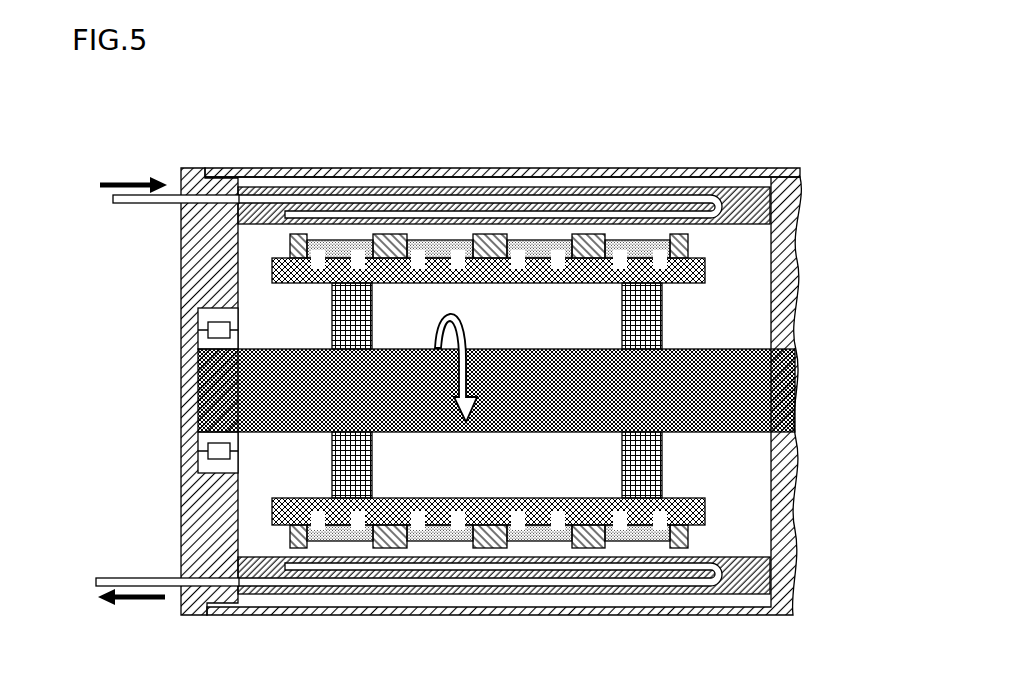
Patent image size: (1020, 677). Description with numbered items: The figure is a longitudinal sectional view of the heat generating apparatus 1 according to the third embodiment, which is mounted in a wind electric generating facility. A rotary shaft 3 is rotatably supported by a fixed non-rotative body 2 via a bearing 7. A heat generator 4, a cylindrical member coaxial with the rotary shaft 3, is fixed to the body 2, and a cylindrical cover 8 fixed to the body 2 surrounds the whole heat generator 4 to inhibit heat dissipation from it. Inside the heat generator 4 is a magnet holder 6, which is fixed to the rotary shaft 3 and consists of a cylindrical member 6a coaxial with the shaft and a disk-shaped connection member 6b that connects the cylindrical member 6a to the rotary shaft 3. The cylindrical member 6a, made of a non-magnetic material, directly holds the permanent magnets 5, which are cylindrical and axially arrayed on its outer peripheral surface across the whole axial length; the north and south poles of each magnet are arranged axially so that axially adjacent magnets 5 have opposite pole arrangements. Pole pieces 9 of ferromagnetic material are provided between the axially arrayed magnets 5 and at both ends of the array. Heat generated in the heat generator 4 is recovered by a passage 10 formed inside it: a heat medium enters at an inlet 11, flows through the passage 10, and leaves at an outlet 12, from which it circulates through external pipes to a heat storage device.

The heat generating apparatus 1 is at (226, 145).
The body 2 is at (185, 168).
The rotary shaft 3 is at (198, 376).
The heat generator 4 is at (421, 187).
The permanent magnets 5 is at (345, 240).
The magnet holder 6 is at (121, 284).
The cylindrical member 6a is at (272, 274).
The connection member 6b is at (332, 304).
The bearing 7 is at (200, 453).
The cover 8 is at (506, 167).
The pole pieces 9 is at (298, 233).
The passage 10 is at (452, 197).
The inlet 11 is at (113, 199).
The outlet 12 is at (97, 580).